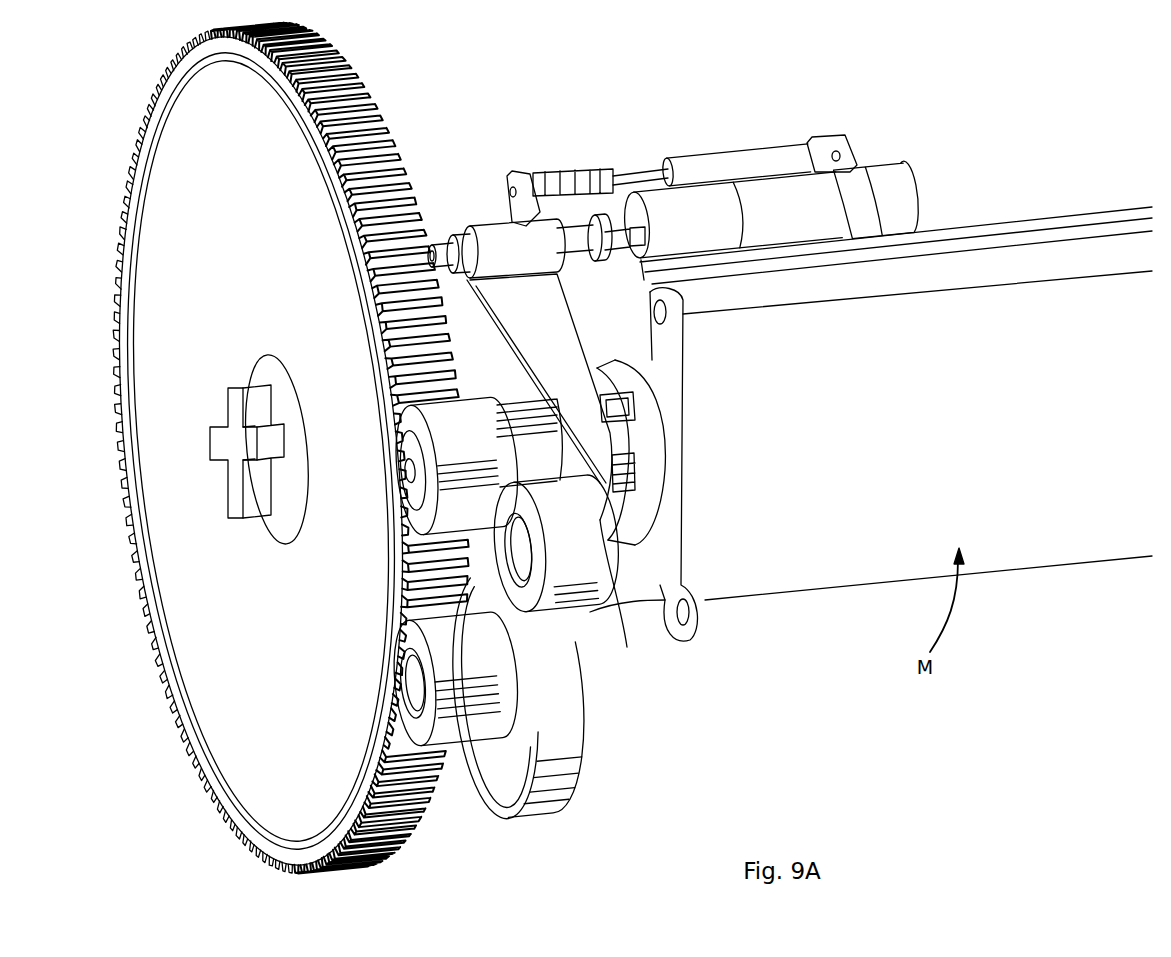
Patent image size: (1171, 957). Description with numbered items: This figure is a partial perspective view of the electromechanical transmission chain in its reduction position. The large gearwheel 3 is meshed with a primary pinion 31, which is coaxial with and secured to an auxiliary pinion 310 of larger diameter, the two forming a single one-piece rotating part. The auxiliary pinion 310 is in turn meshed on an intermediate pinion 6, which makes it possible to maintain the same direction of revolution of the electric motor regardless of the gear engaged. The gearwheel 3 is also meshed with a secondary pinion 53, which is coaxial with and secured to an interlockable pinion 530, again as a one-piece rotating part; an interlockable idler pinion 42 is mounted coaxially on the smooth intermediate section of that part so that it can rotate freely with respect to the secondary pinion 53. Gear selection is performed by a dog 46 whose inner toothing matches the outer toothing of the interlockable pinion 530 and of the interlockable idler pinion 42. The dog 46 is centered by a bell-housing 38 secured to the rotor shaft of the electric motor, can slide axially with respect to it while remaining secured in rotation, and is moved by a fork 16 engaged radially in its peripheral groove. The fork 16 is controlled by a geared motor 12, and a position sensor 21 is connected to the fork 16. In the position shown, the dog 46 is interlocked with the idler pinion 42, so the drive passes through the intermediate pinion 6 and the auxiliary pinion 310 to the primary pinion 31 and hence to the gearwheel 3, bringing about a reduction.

The gearwheel 3 is at (341, 210).
The intermediate pinion 6 is at (583, 606).
The geared motor 12 is at (893, 212).
The fork 16 is at (550, 311).
The position sensor 21 is at (762, 166).
The primary pinion 31 is at (413, 632).
The bell-housing 38 is at (635, 435).
The interlockable idler pinion 42 is at (540, 460).
The dog 46 is at (627, 540).
The secondary pinion 53 is at (413, 412).
The auxiliary pinion 310 is at (550, 730).
The interlockable pinion 530 is at (637, 467).